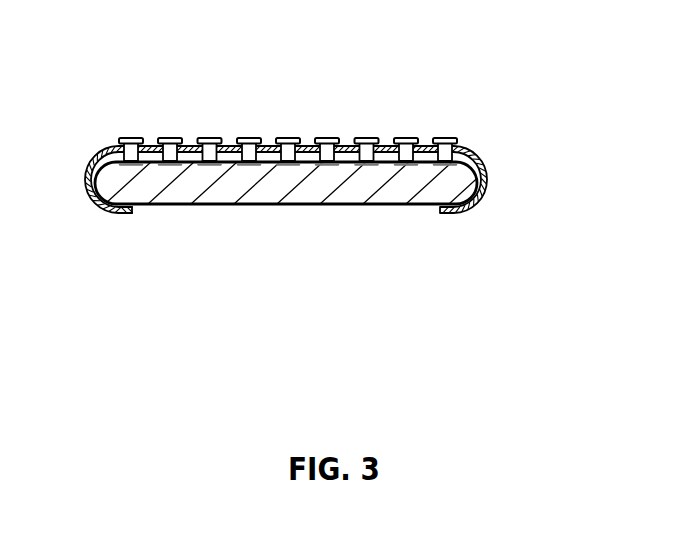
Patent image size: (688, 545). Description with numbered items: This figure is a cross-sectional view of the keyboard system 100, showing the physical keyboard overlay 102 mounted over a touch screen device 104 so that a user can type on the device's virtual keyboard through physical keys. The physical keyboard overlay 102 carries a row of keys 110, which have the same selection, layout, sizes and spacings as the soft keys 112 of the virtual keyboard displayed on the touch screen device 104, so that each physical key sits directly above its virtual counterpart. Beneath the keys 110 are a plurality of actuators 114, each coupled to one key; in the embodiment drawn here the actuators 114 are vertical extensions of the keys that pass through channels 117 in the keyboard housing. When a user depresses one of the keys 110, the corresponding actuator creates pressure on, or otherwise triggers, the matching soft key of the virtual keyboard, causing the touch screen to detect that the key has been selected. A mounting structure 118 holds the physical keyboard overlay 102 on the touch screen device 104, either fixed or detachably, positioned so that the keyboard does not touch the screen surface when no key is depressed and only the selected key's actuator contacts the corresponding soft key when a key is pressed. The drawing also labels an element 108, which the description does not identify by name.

The keyboard system 100 is at (321, 147).
The physical keyboard overlay 102 is at (463, 149).
The touch screen device 104 is at (412, 200).
The casing end portion 108 is at (476, 151).
The keys 110 is at (262, 140).
The soft keys 112 is at (270, 163).
The actuators 114 is at (93, 160).
The channels 117 is at (209, 163).
The mounting structure 118 is at (487, 188).